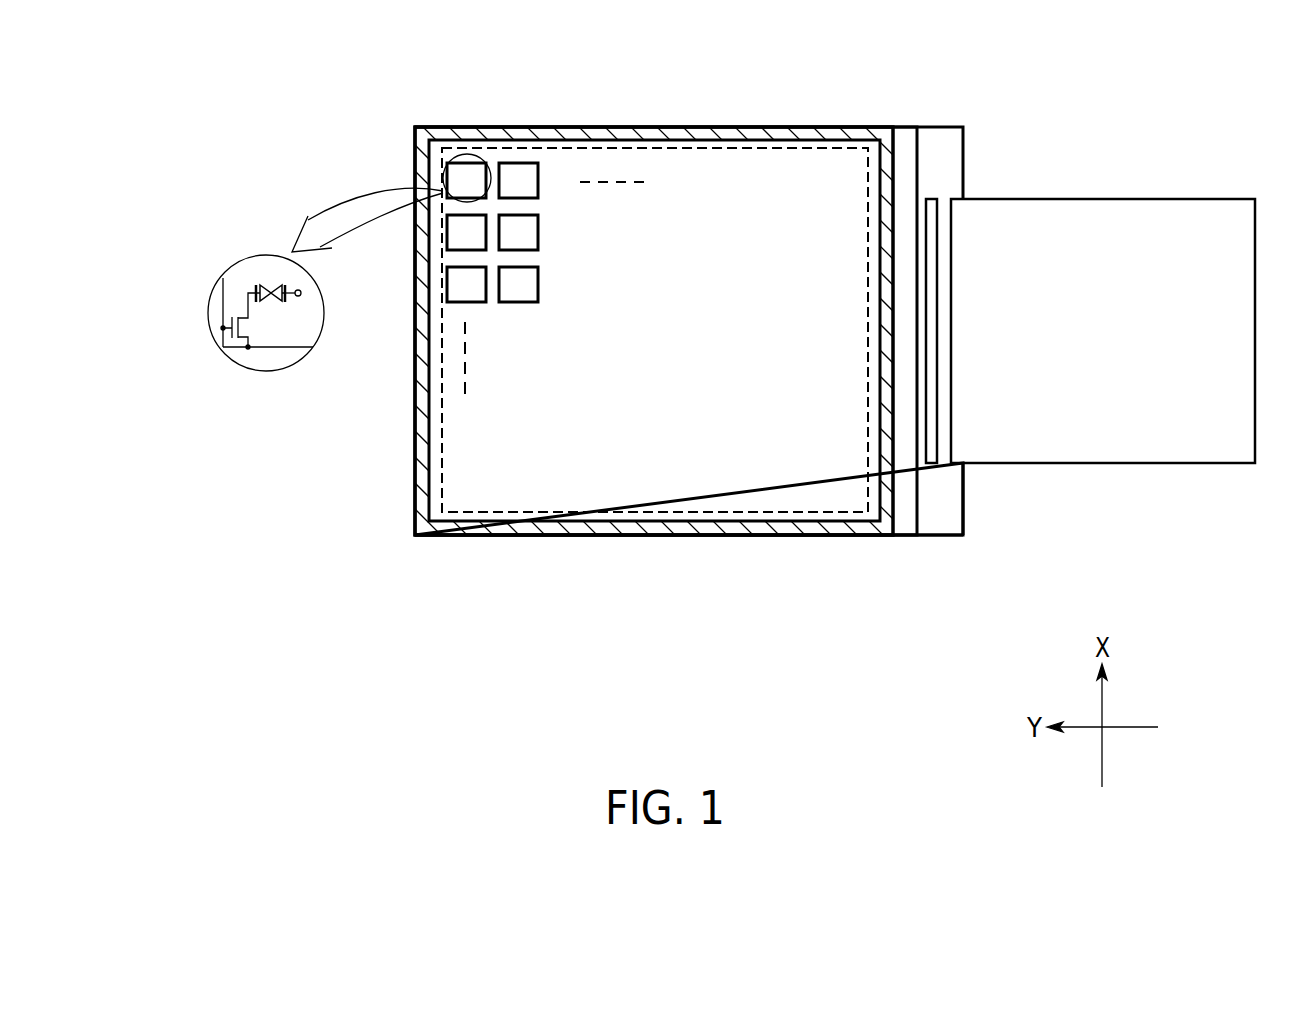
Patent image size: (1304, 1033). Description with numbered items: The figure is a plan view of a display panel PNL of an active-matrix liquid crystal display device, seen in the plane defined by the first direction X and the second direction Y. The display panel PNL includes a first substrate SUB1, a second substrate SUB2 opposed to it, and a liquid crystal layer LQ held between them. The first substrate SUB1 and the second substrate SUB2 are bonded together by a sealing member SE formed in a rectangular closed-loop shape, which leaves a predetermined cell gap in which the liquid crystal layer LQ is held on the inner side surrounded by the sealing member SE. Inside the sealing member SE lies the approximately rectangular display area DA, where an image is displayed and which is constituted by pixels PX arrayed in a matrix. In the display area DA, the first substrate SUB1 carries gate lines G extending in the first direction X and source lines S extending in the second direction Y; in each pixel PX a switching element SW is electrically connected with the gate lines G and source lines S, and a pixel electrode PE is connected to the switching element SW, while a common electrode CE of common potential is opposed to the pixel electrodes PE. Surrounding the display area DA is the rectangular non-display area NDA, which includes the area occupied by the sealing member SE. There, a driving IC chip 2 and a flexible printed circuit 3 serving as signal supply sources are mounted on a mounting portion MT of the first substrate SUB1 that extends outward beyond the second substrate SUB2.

The pixel PX is at (470, 162).
The sealing member SE is at (698, 126).
The non-display area NDA is at (900, 129).
The driving IC chip 2 is at (928, 198).
The flexible printed circuit 3 is at (1115, 198).
The pixel electrode PE is at (248, 283).
The liquid crystal layer LQ is at (273, 282).
The gate line G is at (210, 296).
The common electrode CE is at (292, 302).
The switching element SW is at (253, 323).
The source line S is at (278, 348).
The mounting portion MT is at (945, 469).
The first substrate SUB1 is at (953, 522).
The second substrate SUB2 is at (903, 524).
The display panel PNL is at (934, 537).
The display area DA is at (756, 513).